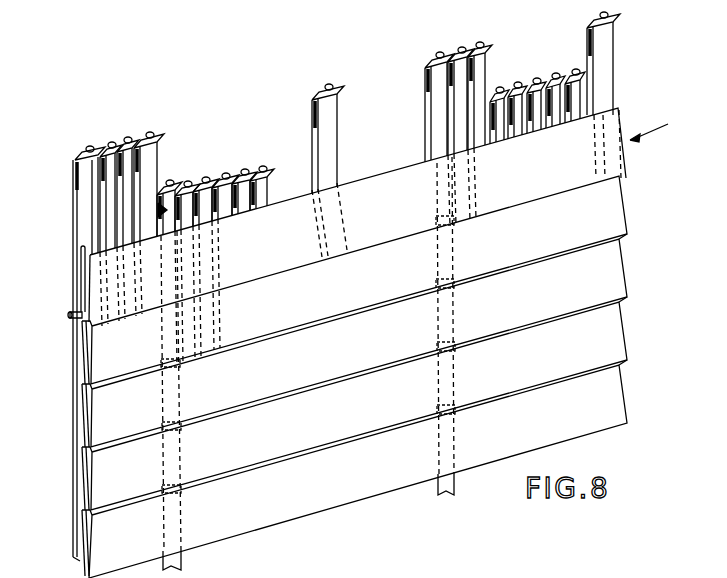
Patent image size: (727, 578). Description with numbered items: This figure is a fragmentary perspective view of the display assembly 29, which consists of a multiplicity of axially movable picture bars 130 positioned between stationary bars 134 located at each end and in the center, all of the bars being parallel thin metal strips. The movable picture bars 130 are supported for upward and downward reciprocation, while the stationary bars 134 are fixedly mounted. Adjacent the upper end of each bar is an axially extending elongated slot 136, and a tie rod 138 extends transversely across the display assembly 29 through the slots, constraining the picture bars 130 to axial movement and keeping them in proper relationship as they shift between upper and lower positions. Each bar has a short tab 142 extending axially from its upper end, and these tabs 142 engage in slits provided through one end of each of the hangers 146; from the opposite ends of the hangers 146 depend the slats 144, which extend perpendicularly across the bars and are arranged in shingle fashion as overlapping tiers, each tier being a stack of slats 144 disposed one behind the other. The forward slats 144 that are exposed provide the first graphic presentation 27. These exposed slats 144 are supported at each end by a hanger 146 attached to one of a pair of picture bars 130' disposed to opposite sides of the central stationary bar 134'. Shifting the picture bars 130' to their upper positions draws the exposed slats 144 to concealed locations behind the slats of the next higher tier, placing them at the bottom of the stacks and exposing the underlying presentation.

The graphic presentation 27 is at (382, 377).
The display assembly 29 is at (385, 214).
The picture bar 130 is at (224, 265).
The picture bar 130' is at (371, 135).
The stationary bar 134 is at (324, 286).
The central stationary bar 134' is at (307, 170).
The elongated slot 136 is at (80, 252).
The tie rod 138 is at (73, 317).
The tab 142 is at (88, 152).
The slat 144 is at (617, 252).
The hanger 146 is at (338, 124).